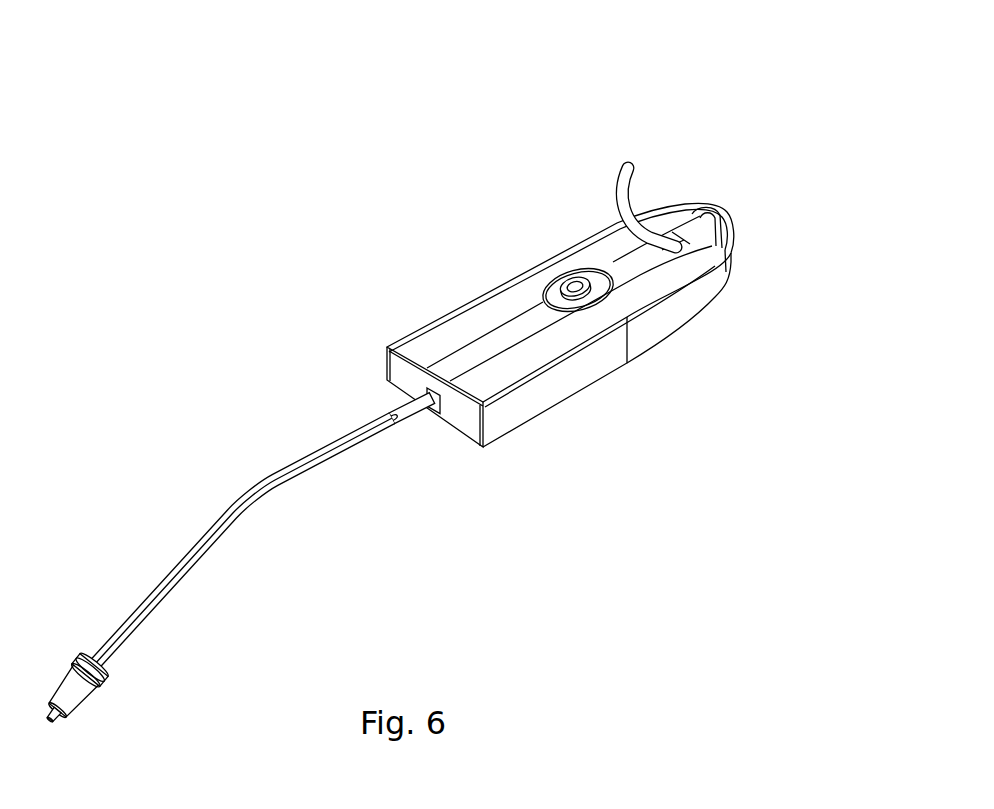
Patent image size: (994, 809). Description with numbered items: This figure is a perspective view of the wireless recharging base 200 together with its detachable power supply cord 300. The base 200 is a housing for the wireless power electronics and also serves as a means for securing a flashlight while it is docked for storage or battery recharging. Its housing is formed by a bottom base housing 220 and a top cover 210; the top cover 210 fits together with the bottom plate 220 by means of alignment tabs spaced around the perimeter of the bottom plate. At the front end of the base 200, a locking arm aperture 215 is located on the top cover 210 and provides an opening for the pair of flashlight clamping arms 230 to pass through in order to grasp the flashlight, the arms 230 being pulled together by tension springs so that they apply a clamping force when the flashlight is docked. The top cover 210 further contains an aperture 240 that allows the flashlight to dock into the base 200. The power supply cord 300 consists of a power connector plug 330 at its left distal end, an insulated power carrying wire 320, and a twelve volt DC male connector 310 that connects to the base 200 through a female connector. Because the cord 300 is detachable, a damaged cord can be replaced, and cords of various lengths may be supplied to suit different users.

The wireless recharging base 200 is at (555, 249).
The top cover 210 is at (482, 312).
The locking arm aperture 215 is at (675, 243).
The bottom base housing 220 is at (548, 402).
The flashlight clamping arms 230 is at (622, 165).
The aperture 240 is at (583, 295).
The detachable power supply cord 300 is at (237, 540).
The 12 VDC male connector 310 is at (412, 407).
The insulated power carrying wire 320 is at (256, 491).
The power connector plug 330 is at (70, 700).